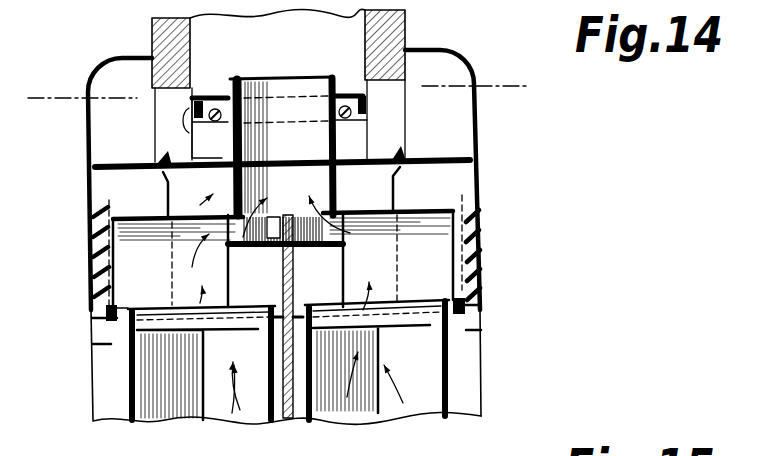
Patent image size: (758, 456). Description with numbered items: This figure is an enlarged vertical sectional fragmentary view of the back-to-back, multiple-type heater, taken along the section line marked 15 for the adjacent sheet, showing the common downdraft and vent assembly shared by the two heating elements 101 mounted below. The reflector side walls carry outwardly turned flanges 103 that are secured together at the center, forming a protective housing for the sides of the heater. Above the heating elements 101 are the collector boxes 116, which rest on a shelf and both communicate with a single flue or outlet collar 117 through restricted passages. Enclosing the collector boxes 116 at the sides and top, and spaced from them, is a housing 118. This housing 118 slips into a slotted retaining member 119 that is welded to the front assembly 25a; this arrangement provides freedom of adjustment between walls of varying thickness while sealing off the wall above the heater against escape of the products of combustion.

The section line 15- 15 is at (28, 96).
The front assembly 25a is at (86, 203).
The heating element 101 is at (126, 387).
The outwardly turned flange 103 is at (300, 405).
The collector box 116 is at (443, 275).
The flue or outlet collar 117 is at (284, 58).
The housing 118 is at (374, 167).
The slotted retaining member 119 is at (128, 142).